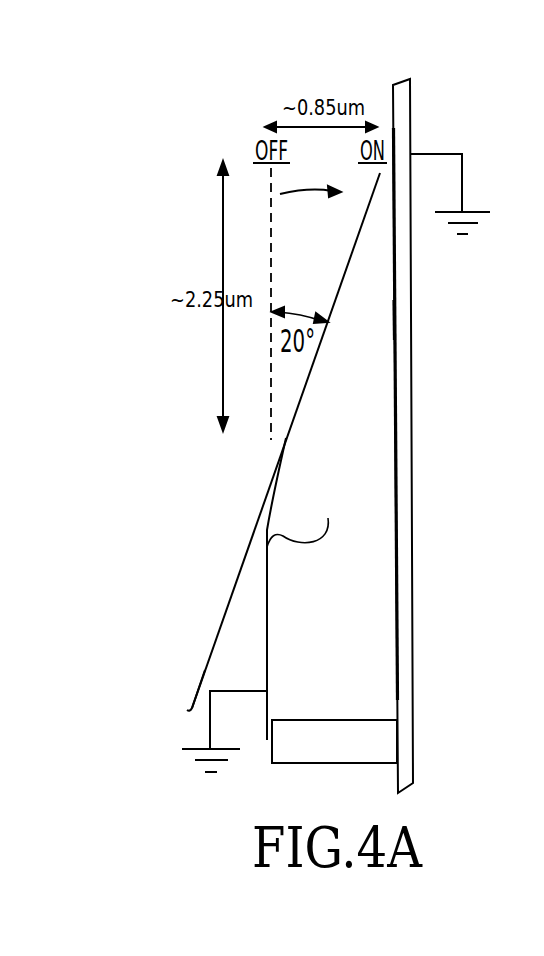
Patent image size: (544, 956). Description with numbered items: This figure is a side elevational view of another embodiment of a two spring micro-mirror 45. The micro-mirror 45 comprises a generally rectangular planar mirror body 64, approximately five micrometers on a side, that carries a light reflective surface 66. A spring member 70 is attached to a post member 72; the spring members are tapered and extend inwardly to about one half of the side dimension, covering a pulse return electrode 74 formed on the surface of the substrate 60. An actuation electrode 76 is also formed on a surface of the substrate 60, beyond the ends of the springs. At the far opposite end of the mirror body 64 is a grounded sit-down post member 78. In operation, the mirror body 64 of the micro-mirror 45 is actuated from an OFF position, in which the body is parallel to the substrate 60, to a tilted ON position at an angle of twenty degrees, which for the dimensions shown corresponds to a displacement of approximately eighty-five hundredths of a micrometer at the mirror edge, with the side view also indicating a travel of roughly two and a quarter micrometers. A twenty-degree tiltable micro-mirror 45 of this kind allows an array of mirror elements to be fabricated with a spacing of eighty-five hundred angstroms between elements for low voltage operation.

The two spring micro-mirror 45 is at (218, 510).
The substrate 60 is at (403, 410).
The mirror body 64 is at (190, 707).
The light reflective surface 66 is at (352, 252).
The spring member 70 is at (267, 623).
The post member 72 is at (312, 733).
The pulse return electrode 74 is at (395, 580).
The actuation electrode 76 is at (392, 320).
The grounded sit-down post member 78 is at (393, 128).